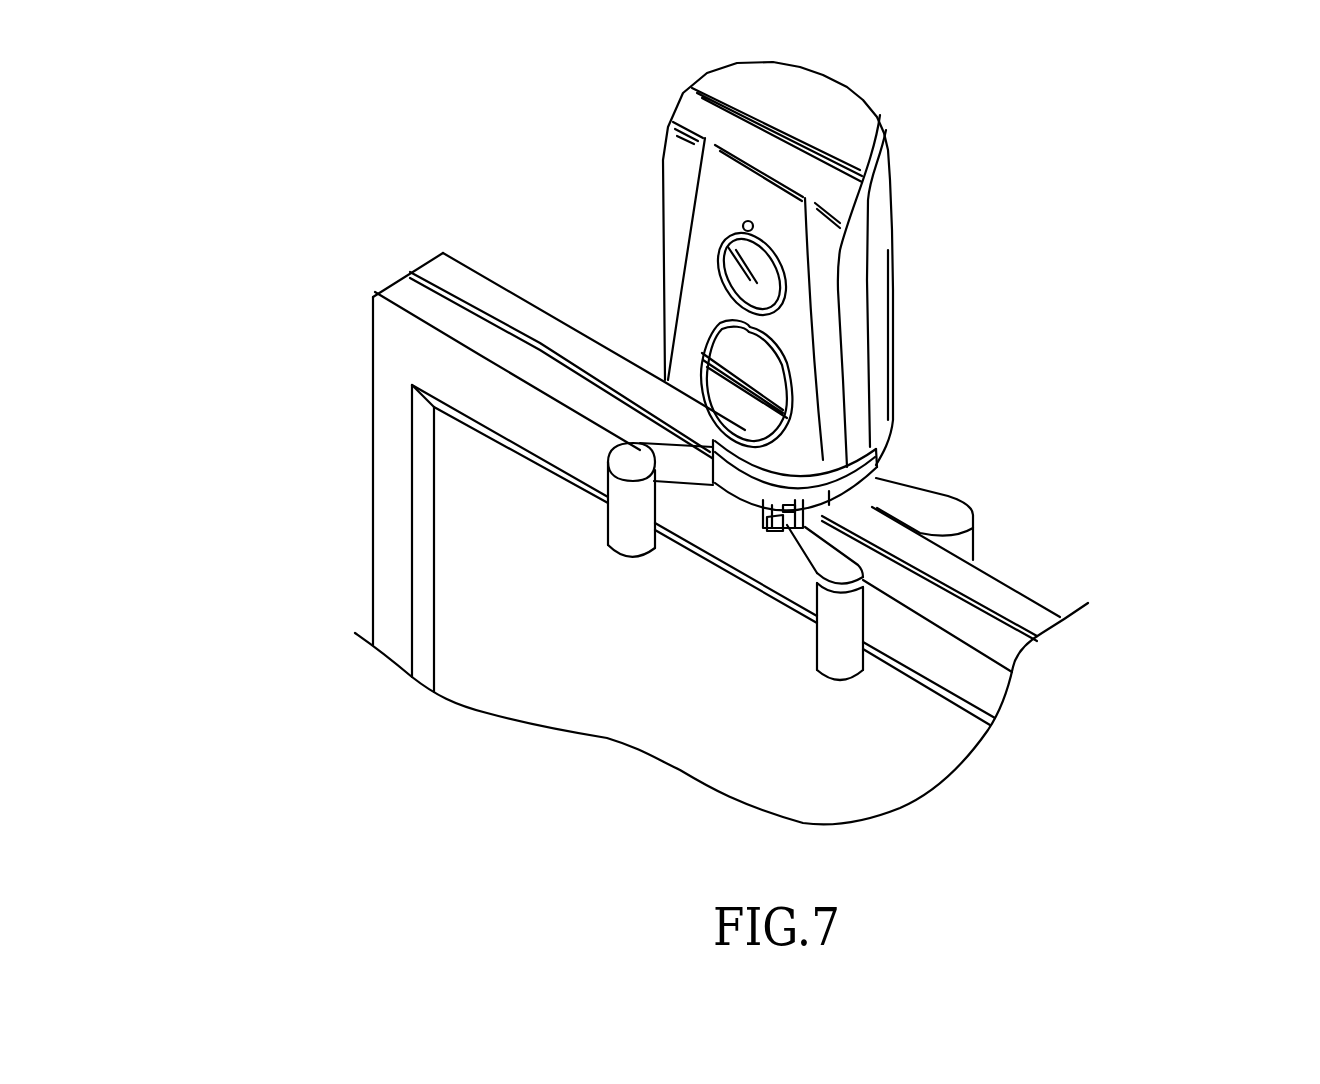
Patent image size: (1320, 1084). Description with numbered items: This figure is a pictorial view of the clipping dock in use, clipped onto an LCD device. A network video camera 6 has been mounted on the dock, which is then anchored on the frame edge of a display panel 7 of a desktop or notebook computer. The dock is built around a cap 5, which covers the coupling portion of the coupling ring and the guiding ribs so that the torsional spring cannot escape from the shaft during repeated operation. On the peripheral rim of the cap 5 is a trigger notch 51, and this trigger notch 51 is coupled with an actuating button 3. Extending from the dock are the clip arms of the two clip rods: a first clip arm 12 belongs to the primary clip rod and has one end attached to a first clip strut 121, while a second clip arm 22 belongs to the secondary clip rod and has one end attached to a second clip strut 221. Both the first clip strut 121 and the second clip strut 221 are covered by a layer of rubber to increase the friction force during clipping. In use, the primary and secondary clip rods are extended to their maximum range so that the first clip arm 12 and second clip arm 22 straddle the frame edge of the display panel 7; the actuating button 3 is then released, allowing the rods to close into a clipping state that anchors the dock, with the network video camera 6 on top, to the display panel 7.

The actuating button 3 is at (789, 521).
The cap 5 is at (755, 468).
The trigger notch 51 is at (753, 528).
The network video camera 6 is at (765, 203).
The display panel 7 is at (512, 607).
The first clip arm 12 is at (838, 557).
The first clip strut 121 is at (850, 628).
The second clip arm 22 is at (655, 455).
The second clip strut 221 is at (627, 497).